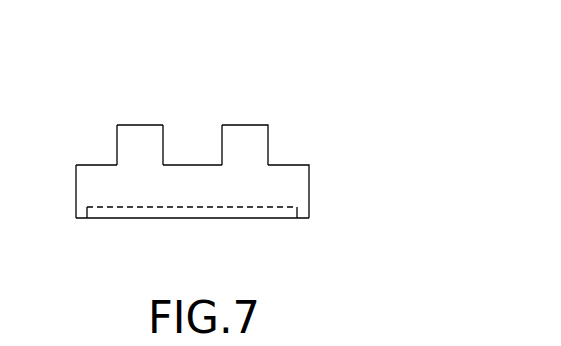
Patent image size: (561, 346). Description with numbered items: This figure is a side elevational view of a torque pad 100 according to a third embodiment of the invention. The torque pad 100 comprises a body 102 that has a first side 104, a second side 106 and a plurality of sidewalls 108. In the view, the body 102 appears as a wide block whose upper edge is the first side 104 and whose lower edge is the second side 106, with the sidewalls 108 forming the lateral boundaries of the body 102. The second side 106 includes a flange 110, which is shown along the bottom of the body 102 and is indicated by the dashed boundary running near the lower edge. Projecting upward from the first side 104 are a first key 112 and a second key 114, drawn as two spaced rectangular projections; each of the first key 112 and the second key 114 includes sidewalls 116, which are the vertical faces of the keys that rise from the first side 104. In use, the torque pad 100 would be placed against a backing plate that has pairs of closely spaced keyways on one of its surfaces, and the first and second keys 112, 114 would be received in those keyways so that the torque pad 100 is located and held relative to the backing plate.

The torque pad 100 is at (201, 164).
The body 102 is at (188, 225).
The first side 104 is at (183, 165).
The second side 106 is at (177, 210).
The sidewalls 108 is at (76, 195).
The flange 110 is at (80, 220).
The first key 112 is at (137, 135).
The second key 114 is at (248, 143).
The sidewalls 116 is at (117, 147).